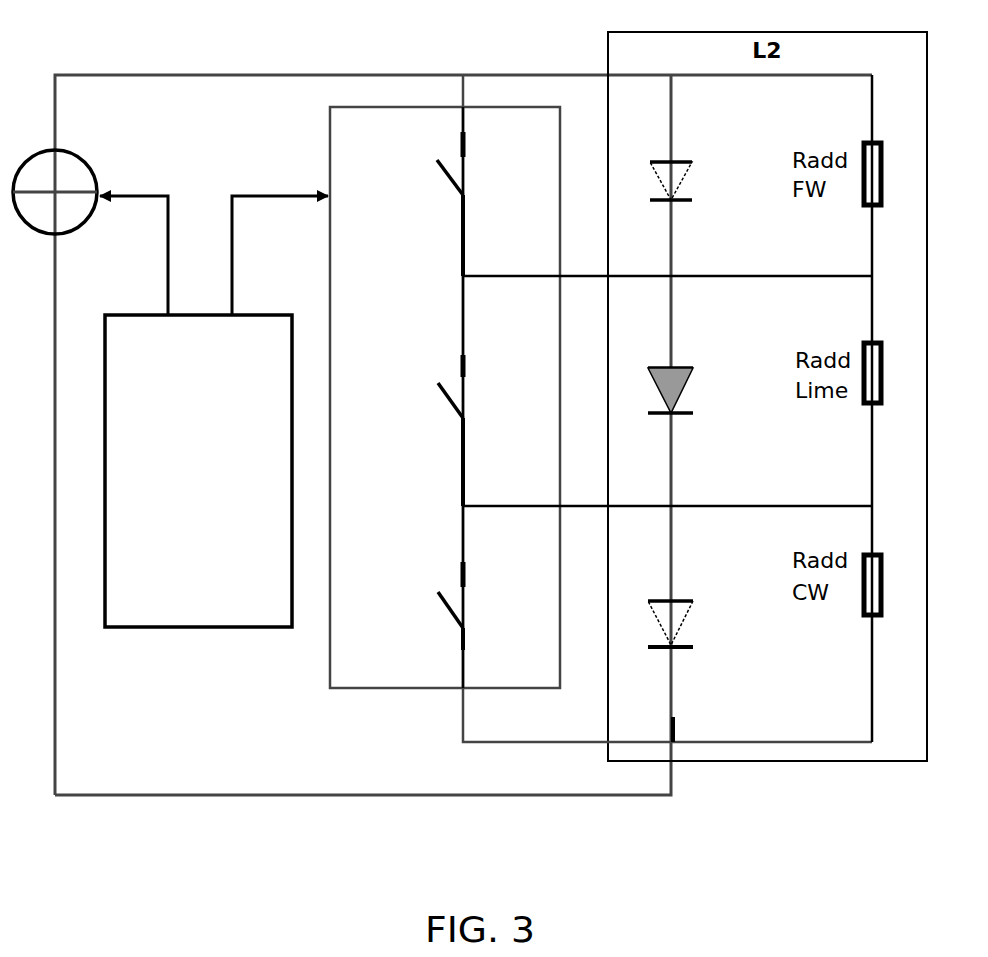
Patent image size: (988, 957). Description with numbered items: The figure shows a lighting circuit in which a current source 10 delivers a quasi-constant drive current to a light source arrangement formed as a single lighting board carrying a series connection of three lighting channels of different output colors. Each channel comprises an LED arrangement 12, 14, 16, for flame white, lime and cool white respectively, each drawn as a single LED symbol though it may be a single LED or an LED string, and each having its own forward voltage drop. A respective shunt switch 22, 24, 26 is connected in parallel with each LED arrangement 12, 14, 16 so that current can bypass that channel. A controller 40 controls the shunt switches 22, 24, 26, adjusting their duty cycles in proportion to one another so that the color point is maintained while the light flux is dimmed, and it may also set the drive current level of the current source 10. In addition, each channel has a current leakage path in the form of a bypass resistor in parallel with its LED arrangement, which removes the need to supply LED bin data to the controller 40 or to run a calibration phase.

The current source 10 is at (78, 152).
The controller 40 is at (205, 627).
The shunt switch 22 is at (442, 177).
The shunt switch 24 is at (442, 392).
The shunt switch 26 is at (442, 607).
The LED arrangement 12 is at (680, 203).
The LED arrangement 14 is at (680, 417).
The LED arrangement 16 is at (680, 598).